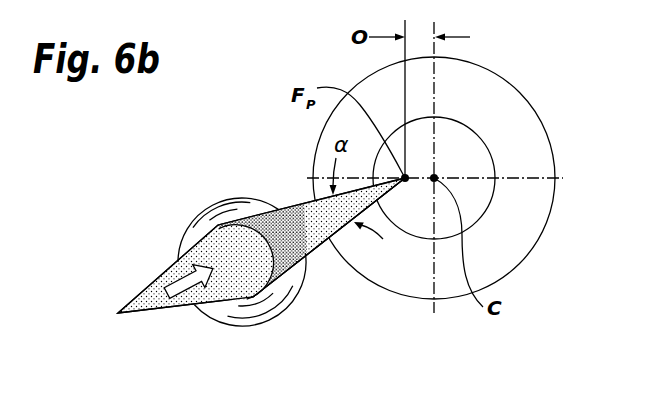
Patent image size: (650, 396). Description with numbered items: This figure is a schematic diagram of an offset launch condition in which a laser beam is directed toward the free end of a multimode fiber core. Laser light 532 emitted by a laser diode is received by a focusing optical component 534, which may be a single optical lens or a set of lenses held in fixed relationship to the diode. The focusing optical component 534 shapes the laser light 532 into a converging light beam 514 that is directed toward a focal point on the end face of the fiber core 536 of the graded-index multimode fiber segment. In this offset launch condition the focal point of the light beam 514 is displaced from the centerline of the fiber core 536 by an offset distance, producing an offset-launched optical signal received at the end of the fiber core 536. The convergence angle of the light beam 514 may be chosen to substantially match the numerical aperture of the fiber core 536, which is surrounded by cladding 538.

The light beam 514 is at (331, 238).
The laser light 532 is at (172, 265).
The focusing optical component 534 is at (279, 302).
The fiber core 536 is at (467, 128).
The cladding 538 is at (548, 164).